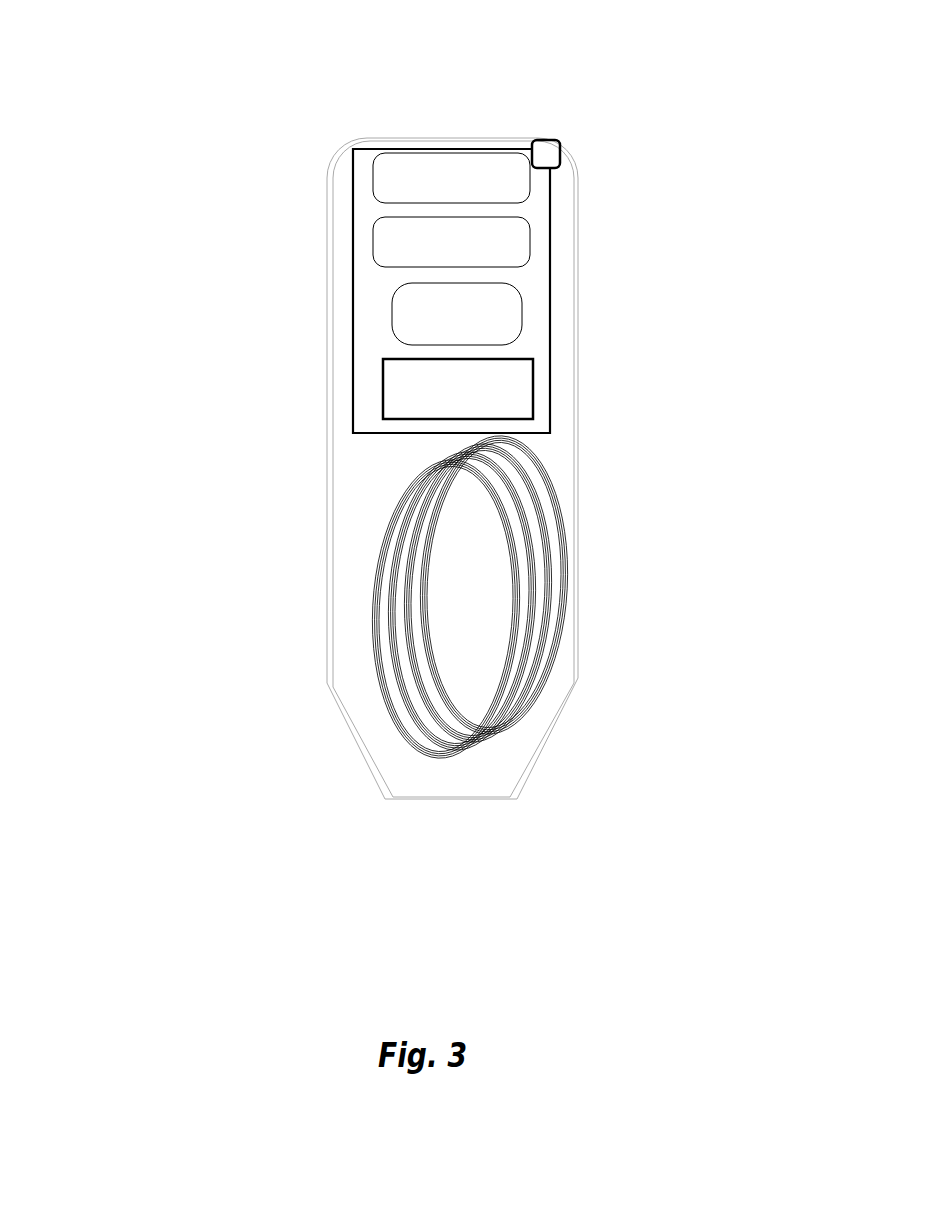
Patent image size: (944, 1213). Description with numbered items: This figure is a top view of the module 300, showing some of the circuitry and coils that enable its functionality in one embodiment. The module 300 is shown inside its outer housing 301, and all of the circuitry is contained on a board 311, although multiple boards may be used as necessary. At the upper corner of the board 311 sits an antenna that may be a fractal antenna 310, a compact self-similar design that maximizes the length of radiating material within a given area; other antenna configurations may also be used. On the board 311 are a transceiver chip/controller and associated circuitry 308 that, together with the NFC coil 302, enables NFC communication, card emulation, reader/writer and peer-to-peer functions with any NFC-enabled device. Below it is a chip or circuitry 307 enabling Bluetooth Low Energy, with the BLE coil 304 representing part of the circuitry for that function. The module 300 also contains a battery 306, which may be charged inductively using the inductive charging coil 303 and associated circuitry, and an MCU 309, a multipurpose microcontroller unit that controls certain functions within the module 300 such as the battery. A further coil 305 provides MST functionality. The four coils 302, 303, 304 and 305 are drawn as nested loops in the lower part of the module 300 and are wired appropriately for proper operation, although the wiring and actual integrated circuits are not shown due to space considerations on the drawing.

The module 300 is at (192, 114).
The housing 301 is at (357, 453).
The NFC coil 302 is at (506, 548).
The inductive charging coil 303 is at (528, 547).
The BLE coil 304 is at (547, 570).
The MST coil 305 is at (567, 593).
The battery 306 is at (523, 322).
The BLE chip or circuitry 307 is at (520, 239).
The NFC transceiver chip/controller and associated circuitry 308 is at (520, 188).
The MCU 309 is at (532, 401).
The fractal antenna 310 is at (545, 138).
The board 311 is at (353, 308).